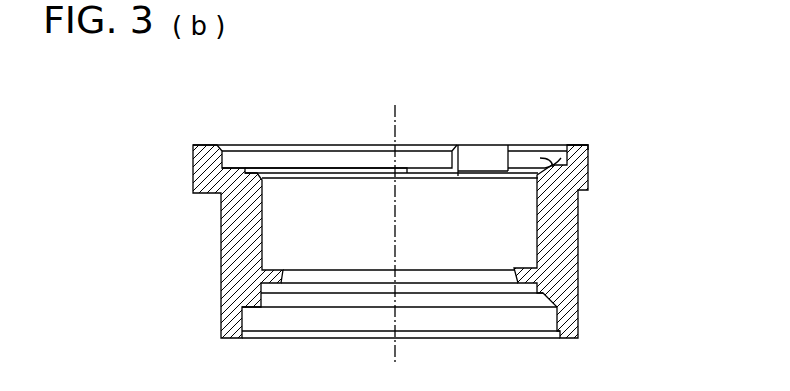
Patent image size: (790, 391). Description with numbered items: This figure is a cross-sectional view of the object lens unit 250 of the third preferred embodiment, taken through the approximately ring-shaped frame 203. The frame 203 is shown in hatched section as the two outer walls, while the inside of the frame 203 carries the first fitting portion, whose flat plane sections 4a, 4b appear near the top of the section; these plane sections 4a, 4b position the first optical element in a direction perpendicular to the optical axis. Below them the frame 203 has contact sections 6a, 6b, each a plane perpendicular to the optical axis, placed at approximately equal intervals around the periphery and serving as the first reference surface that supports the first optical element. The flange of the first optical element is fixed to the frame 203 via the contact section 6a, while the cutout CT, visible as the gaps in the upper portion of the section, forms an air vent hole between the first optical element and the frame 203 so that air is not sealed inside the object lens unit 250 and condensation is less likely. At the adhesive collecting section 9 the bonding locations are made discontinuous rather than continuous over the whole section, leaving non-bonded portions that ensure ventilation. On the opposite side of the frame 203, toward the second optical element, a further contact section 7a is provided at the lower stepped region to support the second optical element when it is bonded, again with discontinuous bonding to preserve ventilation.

The object lens unit 250 is at (608, 223).
The frame 203 is at (221, 249).
The contact section 7a is at (221, 327).
The plane section 4b is at (309, 162).
The contact section 6b is at (348, 166).
The cutout CT is at (229, 160).
The plane section 4a is at (550, 156).
The contact section 6a is at (542, 160).
The adhesive collecting section 9 is at (572, 145).